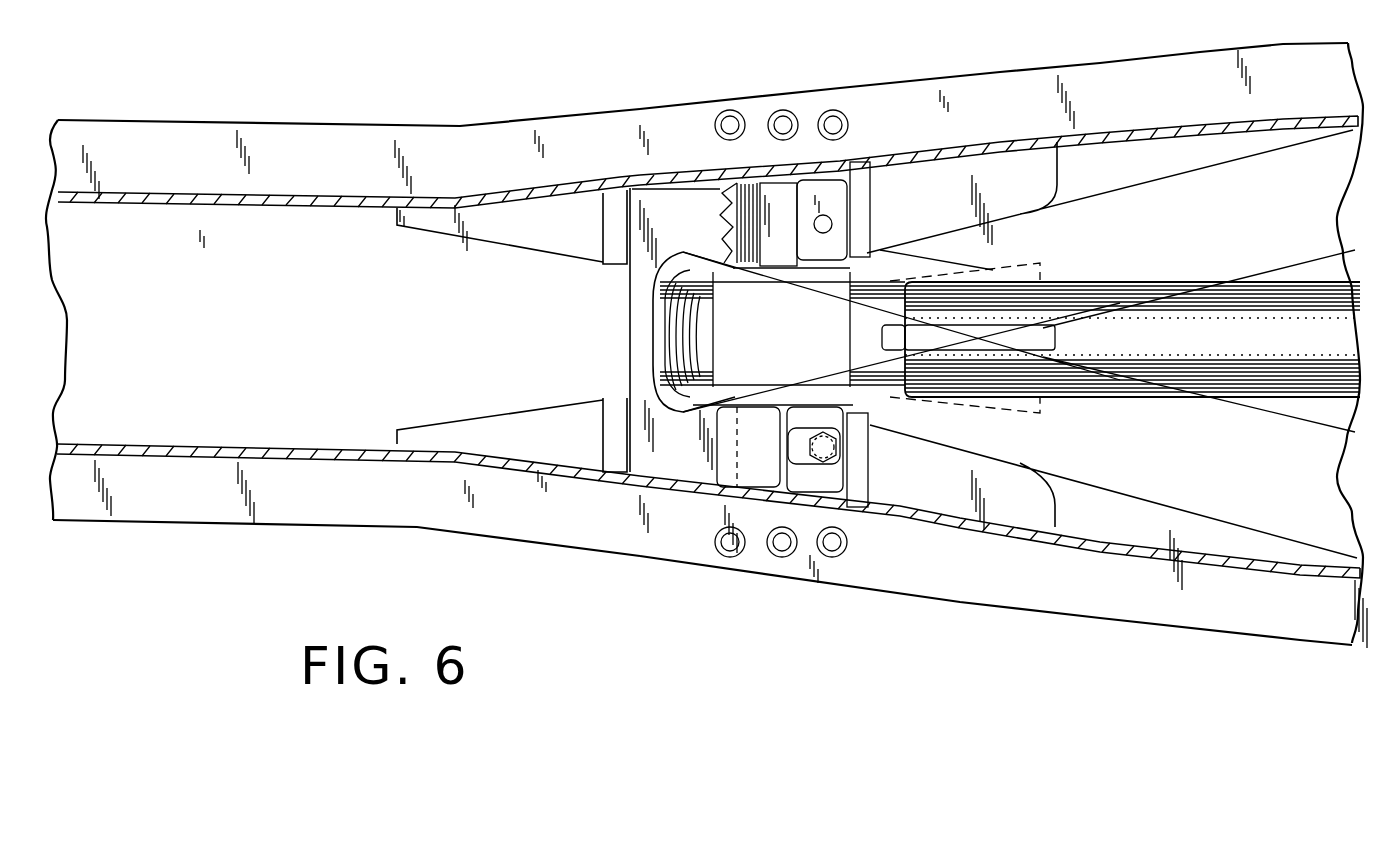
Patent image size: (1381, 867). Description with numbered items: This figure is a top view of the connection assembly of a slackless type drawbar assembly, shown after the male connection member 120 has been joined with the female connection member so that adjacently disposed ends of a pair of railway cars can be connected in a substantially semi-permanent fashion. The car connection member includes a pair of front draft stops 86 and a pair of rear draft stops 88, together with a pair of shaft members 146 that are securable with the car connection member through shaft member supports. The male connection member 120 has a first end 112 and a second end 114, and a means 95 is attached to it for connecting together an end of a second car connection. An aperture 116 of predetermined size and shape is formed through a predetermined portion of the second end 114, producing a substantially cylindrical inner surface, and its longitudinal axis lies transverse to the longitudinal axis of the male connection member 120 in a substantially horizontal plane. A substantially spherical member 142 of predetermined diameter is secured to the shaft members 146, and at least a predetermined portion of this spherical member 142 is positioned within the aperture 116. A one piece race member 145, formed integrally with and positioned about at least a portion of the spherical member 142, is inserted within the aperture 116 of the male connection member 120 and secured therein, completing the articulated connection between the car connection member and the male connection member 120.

The front draft stops 86 is at (1008, 170).
The rear draft stops 88 is at (507, 212).
The means for connecting 95 is at (1122, 292).
The first end 112 is at (1297, 428).
The second end 114 is at (892, 405).
The aperture 116 is at (652, 318).
The male connection member 120 is at (1000, 416).
The spherical member 142 is at (700, 396).
The one piece race member 145 is at (878, 344).
The shaft members 146 is at (790, 228).